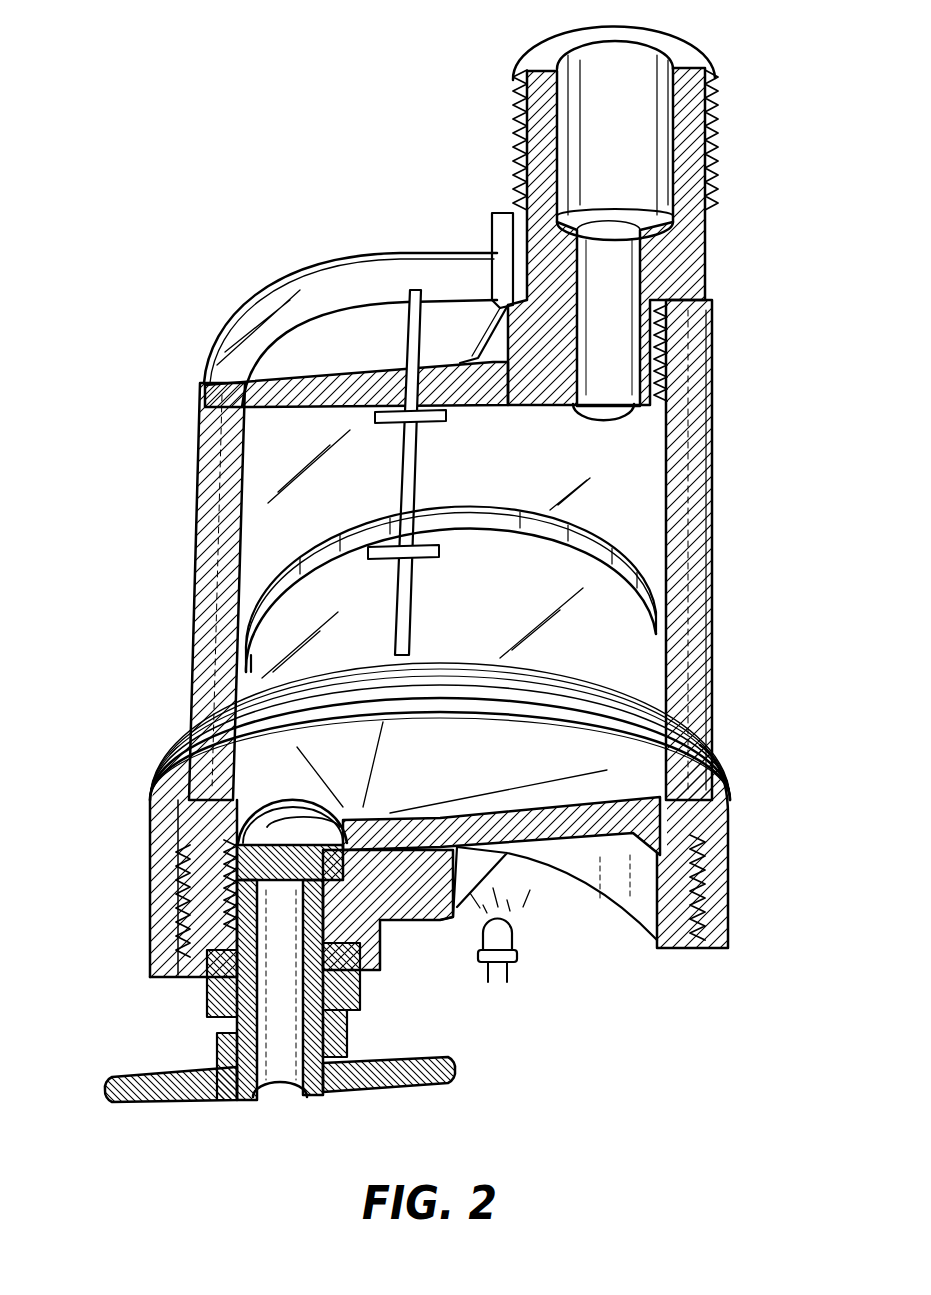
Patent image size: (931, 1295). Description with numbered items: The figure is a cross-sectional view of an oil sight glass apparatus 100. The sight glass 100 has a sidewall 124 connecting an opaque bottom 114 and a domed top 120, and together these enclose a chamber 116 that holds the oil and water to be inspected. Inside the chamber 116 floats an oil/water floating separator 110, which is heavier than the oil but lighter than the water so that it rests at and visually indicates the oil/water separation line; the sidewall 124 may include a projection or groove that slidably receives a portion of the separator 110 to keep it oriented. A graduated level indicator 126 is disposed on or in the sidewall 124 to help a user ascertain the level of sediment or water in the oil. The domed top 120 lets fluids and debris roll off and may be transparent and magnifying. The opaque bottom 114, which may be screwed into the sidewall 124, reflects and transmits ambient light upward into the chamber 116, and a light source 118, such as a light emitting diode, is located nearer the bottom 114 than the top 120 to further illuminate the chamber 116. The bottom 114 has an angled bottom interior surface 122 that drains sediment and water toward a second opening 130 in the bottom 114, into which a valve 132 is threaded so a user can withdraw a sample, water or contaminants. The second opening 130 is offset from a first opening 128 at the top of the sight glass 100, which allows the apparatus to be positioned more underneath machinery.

The oil sight glass apparatus 100 is at (146, 364).
The oil/water floating separator 110 is at (637, 580).
The opaque bottom 114 is at (603, 788).
The chamber 116 is at (650, 657).
The light source 118 is at (512, 943).
The domed top 120 is at (313, 347).
The angled bottom interior surface 122 is at (441, 782).
The sidewall 124 is at (212, 622).
The graduated level indicator 126 is at (407, 322).
The first opening 128 is at (666, 407).
The second opening 130 is at (257, 788).
The valve 132 is at (314, 1090).